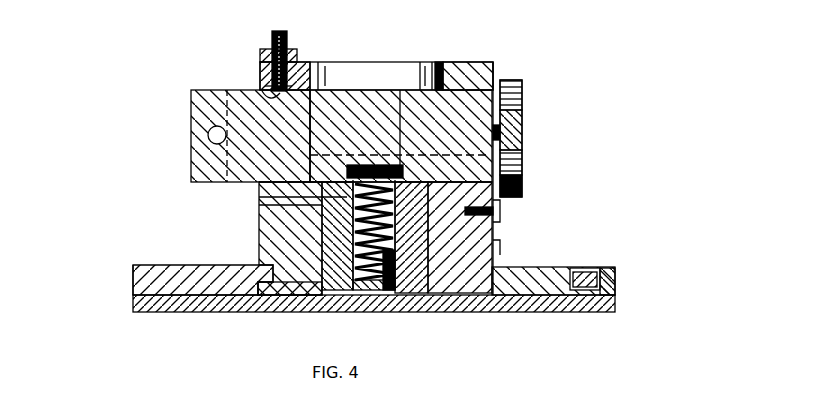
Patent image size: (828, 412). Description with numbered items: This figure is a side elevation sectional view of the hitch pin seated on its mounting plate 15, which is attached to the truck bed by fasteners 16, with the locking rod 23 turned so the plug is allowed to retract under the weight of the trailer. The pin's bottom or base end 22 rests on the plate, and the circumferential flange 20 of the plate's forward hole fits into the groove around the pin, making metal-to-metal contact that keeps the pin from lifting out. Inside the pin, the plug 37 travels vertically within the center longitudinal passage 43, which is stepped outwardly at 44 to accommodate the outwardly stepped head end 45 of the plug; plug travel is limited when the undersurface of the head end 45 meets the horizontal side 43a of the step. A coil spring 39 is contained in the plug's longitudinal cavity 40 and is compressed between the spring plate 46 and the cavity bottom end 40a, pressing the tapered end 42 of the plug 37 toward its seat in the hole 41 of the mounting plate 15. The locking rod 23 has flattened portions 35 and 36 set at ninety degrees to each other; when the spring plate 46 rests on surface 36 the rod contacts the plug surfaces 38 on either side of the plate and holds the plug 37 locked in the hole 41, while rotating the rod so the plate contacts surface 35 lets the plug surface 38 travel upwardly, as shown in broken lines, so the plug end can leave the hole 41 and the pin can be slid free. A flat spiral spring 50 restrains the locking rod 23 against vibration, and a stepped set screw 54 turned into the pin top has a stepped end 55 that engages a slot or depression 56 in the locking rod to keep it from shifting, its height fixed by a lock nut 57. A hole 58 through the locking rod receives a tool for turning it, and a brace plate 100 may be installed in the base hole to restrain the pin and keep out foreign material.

The mounting plate 15 is at (133, 285).
The fasteners 16 is at (140, 265).
The circumferential flange 20 is at (535, 300).
The bottom or base end 22 is at (282, 297).
The locking rod 23 is at (290, 166).
The flattened portion 35 is at (462, 88).
The flattened portion 36 is at (362, 176).
The plug 37 is at (505, 210).
The plug surfaces 38 is at (375, 96).
The spring 39 is at (505, 247).
The longitudinal cavity 40 is at (259, 232).
The cavity bottom end 40a is at (390, 297).
The hole 41 is at (440, 298).
The tapered end 42 is at (330, 296).
The center longitudinal passage 43 is at (259, 246).
The horizontal side of stepped portion 43a is at (259, 212).
The outward step of passage 44 is at (262, 190).
The stepped head end 45 is at (259, 200).
The spring plate 46 is at (398, 176).
The flat spiral spring 50 is at (525, 92).
The stepped set screw 54 is at (297, 52).
The stepped set screw end 55 is at (270, 86).
The slot or depression 56 is at (272, 92).
The lock nut 57 is at (271, 52).
The hole 58 is at (190, 97).
The brace plate 100 is at (552, 268).